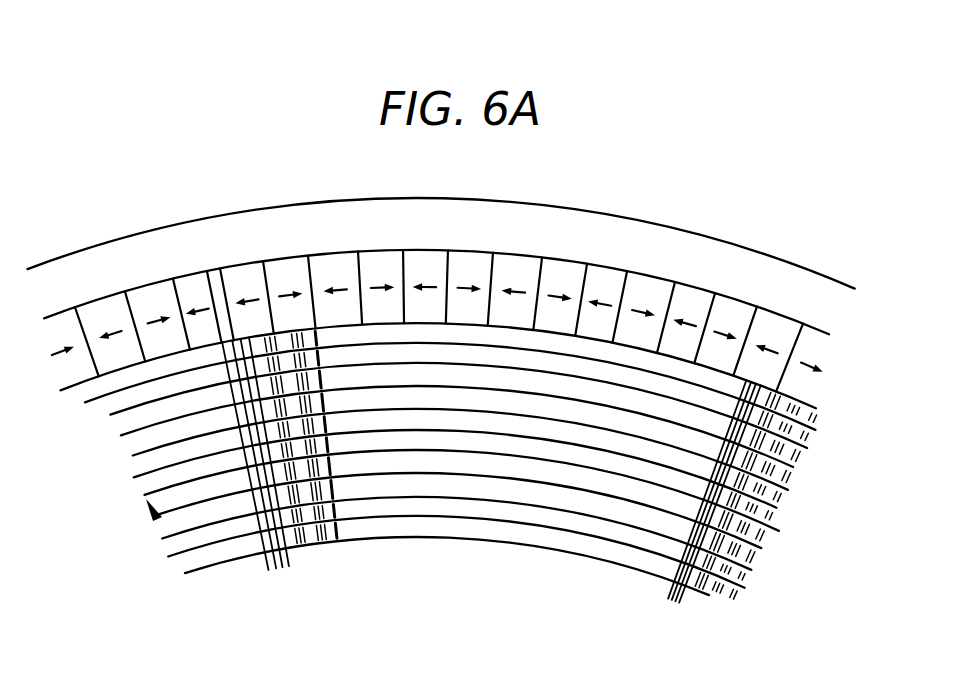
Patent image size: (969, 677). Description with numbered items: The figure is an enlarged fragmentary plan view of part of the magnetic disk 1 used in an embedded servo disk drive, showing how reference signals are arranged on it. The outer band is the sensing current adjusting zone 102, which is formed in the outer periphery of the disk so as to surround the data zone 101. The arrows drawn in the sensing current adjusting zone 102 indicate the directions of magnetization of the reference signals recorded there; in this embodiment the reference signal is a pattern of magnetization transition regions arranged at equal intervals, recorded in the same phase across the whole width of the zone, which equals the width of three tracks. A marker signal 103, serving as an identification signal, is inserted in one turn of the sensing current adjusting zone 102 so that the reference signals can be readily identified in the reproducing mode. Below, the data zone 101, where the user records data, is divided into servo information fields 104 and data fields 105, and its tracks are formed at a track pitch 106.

The magnetic disk 1 is at (742, 243).
The data zone 101 is at (800, 518).
The sensing current adjusting zone 102 is at (890, 444).
The marker signal 103 is at (197, 254).
The servo information field 104 is at (273, 565).
The data field 105 is at (665, 583).
The track pitch 106 is at (150, 513).